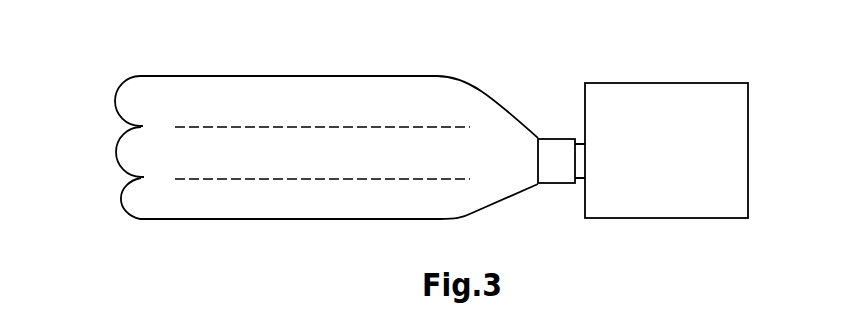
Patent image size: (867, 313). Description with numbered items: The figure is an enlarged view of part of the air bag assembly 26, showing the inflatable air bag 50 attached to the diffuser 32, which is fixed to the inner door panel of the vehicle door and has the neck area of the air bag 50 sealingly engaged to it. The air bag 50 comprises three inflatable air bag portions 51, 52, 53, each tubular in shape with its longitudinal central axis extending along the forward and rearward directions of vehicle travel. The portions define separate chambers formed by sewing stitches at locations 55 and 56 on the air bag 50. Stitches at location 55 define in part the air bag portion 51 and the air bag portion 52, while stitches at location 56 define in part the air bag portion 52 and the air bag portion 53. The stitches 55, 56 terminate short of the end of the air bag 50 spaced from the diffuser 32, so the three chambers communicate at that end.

The air bag assembly 26 is at (78, 178).
The diffuser 32 is at (700, 151).
The air bag 50 is at (284, 60).
The air bag portion 51 is at (117, 99).
The air bag portion 52 is at (117, 149).
The air bag portion 53 is at (118, 196).
The stitch location 55 is at (338, 127).
The stitch location 56 is at (337, 180).